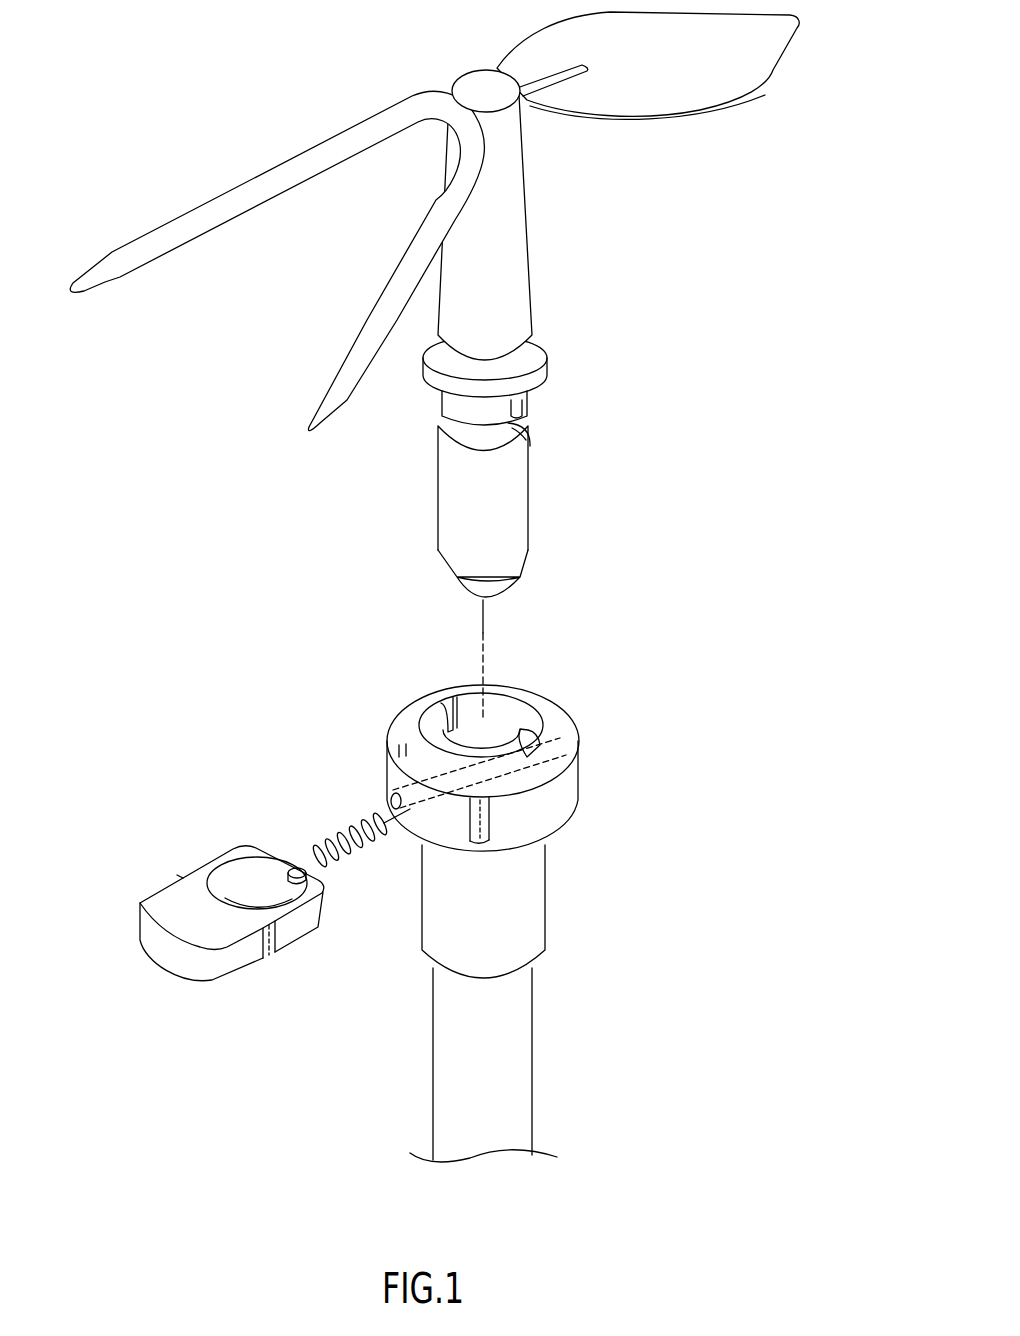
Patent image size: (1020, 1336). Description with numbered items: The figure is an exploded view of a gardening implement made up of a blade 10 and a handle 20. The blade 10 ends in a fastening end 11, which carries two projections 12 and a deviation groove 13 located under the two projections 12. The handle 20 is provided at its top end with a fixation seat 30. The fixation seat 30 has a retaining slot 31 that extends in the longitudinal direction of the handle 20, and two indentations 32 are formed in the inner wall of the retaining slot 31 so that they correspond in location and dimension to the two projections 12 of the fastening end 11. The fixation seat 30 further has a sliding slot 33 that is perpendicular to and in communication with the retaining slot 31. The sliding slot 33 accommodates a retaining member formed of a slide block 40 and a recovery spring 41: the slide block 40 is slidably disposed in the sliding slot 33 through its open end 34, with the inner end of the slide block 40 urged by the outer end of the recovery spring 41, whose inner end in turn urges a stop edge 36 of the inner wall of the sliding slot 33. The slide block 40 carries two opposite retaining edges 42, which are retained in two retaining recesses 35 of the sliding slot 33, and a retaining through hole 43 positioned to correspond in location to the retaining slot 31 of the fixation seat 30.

The blade 10 is at (500, 253).
The fastening end 11 is at (452, 512).
The projections 12 is at (527, 402).
The deviation groove 13 is at (498, 432).
The handle 20 is at (517, 1055).
The fixation seat 30 is at (570, 810).
The retaining slot 31 is at (498, 717).
The indentations 32 is at (447, 693).
The sliding slot 33 is at (410, 802).
The open end 34 is at (463, 825).
The retaining recesses 35 is at (407, 747).
The stop edge 36 is at (567, 743).
The slide block 40 is at (220, 857).
The recovery spring 41 is at (340, 830).
The retaining edges 42 is at (180, 877).
The retaining through hole 43 is at (248, 863).